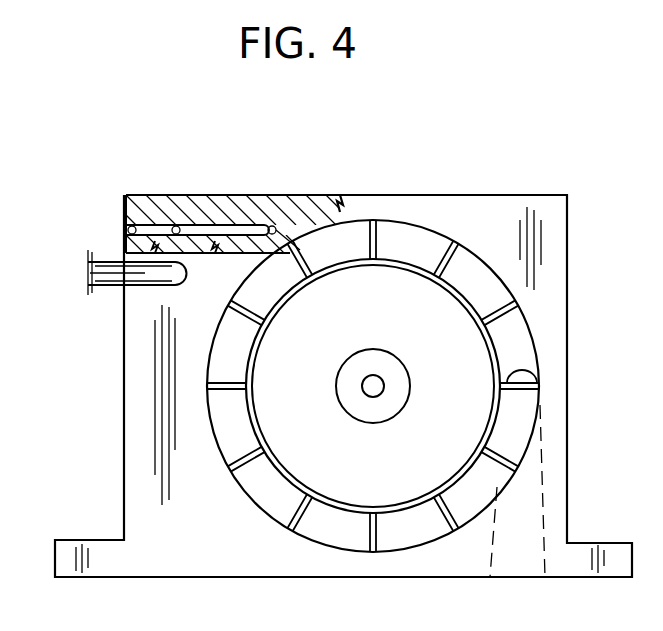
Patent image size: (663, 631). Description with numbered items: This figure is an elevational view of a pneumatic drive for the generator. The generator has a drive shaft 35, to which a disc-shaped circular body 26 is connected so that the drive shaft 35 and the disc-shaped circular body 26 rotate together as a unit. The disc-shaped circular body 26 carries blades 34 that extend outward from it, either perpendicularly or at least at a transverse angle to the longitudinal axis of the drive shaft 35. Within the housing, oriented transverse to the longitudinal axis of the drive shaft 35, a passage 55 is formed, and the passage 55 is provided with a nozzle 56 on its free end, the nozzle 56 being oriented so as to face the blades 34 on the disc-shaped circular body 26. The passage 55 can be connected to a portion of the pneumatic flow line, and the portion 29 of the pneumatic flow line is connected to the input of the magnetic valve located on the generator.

The disc-shaped circular body 26 is at (480, 373).
The portion of the pneumatic flow line 29 is at (100, 273).
The blades 34 is at (412, 233).
The drive shaft 35 is at (398, 373).
The passage 55 is at (152, 225).
The nozzle 56 is at (272, 225).